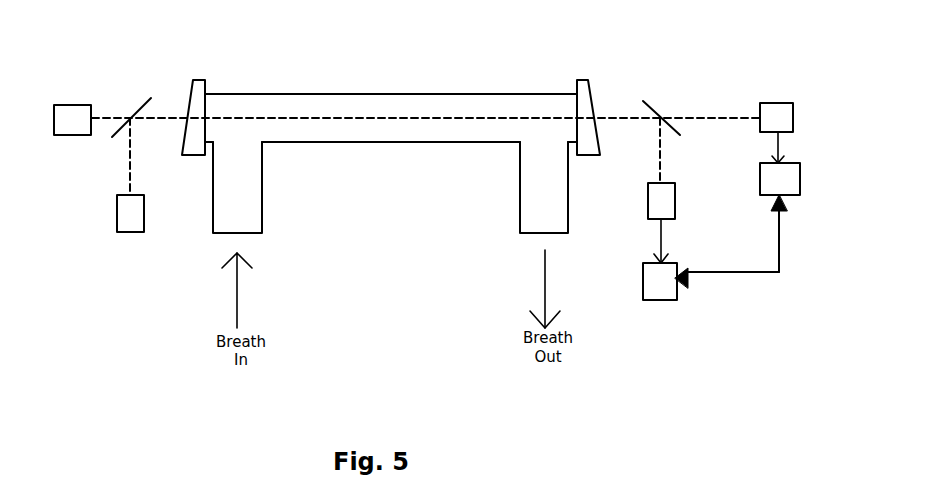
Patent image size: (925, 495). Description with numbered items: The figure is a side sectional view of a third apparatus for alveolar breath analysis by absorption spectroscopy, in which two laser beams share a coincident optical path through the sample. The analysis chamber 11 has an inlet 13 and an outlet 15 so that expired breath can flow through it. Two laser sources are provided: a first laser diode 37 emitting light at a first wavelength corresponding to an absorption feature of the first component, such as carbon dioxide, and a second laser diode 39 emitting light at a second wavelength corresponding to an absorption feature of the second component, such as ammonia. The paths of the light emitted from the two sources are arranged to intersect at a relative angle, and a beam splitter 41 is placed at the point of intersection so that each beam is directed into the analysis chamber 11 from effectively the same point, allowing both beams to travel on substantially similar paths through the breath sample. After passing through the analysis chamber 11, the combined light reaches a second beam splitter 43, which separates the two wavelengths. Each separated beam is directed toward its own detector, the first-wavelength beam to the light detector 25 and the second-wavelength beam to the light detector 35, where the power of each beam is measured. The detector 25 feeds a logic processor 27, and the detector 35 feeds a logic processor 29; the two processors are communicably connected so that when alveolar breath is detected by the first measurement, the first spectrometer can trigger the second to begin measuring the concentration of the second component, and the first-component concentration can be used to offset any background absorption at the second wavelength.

The analysis chamber 11 is at (391, 86).
The inlet 13 is at (263, 222).
The outlet 15 is at (525, 224).
The light detector 25 is at (809, 87).
The logic processor 27 is at (823, 167).
The logic processor 29 is at (642, 311).
The light detector 35 is at (636, 228).
The laser diode 37 is at (54, 83).
The laser diode 39 is at (106, 249).
The beam splitter 41 is at (131, 79).
The second beam splitter 43 is at (687, 85).